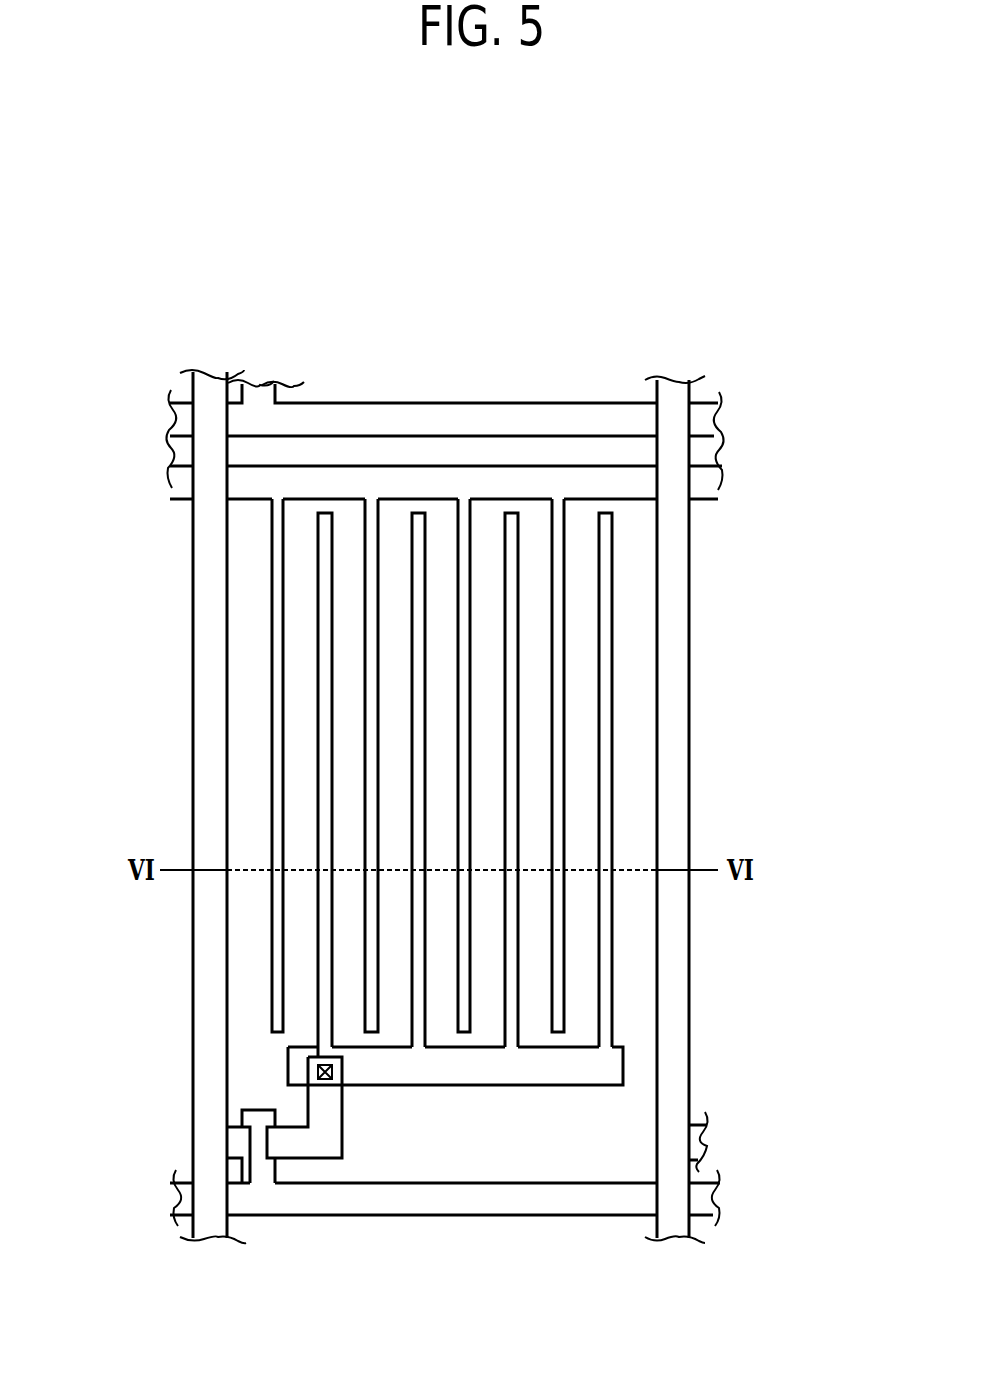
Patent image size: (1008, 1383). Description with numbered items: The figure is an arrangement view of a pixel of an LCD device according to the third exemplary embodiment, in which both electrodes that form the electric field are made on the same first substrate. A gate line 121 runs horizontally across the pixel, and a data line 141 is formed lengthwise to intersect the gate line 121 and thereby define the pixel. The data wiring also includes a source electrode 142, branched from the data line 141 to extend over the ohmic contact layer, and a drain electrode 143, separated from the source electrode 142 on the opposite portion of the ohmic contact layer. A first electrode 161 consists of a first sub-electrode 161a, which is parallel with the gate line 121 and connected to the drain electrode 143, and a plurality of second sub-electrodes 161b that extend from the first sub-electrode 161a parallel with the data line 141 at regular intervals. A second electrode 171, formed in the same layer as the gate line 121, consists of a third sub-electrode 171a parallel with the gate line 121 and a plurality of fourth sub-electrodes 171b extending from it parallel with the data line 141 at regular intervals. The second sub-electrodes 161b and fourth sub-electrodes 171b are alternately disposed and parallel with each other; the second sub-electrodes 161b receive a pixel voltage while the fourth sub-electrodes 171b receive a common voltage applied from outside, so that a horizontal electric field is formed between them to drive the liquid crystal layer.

The gate line 121 is at (458, 413).
The data line 141 is at (195, 672).
The source electrode 142 is at (248, 1157).
The drain electrode 143 is at (326, 1158).
The first electrode 161 is at (584, 799).
The first sub-electrode 161a is at (618, 1063).
The second sub-electrode 161b is at (607, 950).
The second electrode 171 is at (525, 749).
The third sub-electrode 171a is at (712, 483).
The fourth sub-electrode 171b is at (565, 600).